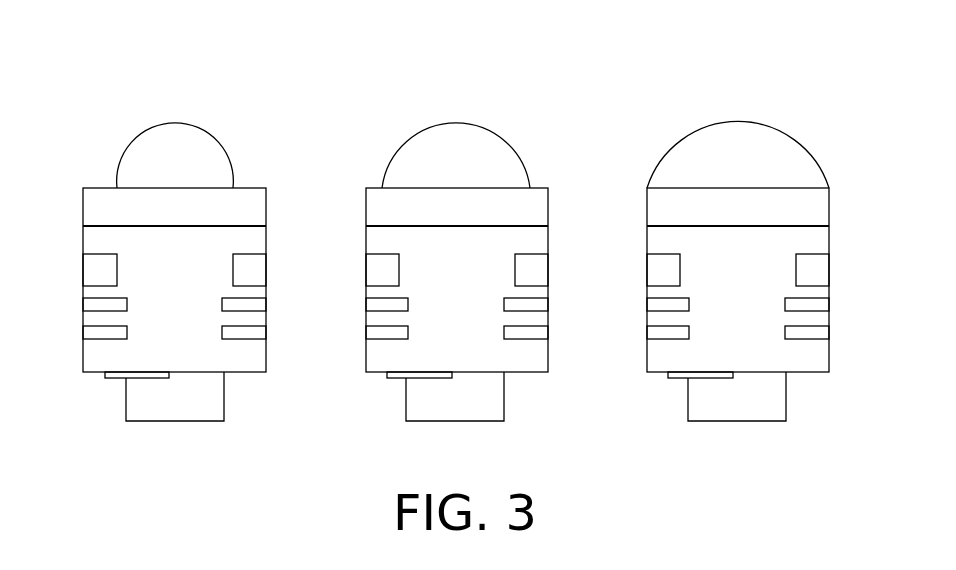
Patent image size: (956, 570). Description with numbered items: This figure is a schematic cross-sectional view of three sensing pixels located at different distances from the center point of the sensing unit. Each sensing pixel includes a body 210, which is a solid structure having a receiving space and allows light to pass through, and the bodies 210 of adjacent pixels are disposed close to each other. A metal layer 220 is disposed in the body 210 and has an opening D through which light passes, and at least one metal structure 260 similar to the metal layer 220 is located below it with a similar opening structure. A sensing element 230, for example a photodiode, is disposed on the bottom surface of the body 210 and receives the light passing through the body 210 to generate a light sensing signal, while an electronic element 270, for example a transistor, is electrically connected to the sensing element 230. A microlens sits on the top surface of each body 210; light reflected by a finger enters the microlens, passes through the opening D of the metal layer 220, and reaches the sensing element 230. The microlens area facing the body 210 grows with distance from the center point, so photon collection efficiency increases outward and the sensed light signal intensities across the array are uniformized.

The body 210 is at (90, 241).
The metal layer 220 is at (253, 273).
The sensing element 230 is at (215, 397).
The metal structure 260 is at (88, 304).
The electronic element 270 is at (113, 378).
The opening D is at (180, 273).